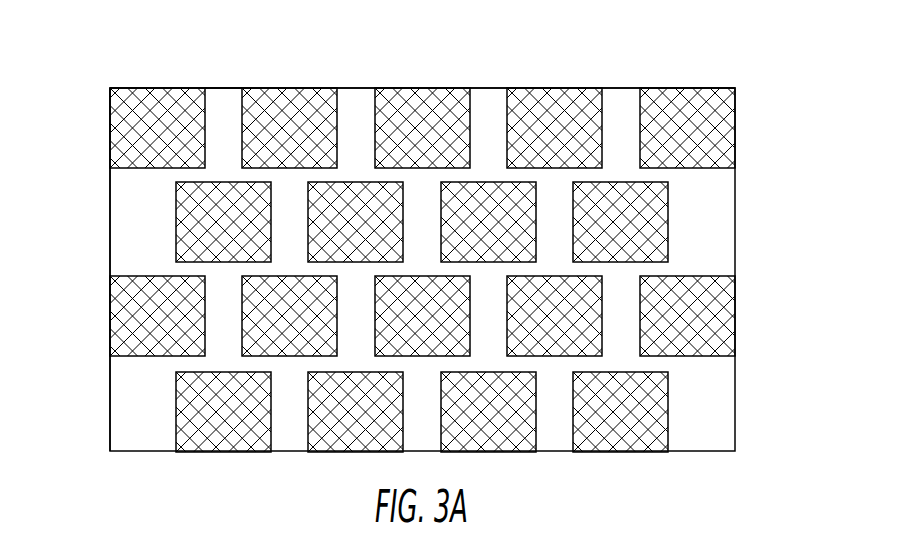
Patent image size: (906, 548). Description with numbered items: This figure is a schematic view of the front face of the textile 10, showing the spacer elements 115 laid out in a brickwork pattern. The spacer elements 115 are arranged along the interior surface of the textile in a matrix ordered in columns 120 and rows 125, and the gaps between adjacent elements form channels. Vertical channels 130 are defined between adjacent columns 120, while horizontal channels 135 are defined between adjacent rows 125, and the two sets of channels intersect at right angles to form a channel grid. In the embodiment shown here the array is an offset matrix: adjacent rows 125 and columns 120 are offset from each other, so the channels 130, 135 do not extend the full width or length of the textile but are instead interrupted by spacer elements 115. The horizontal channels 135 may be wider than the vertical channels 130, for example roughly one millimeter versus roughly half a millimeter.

The implantable device 10 is at (742, 68).
The spacer elements 115 is at (160, 115).
The columns 120 is at (150, 56).
The rows 125 is at (78, 200).
The first or vertical channels 130 is at (219, 112).
The horizontal channels 135 is at (226, 272).